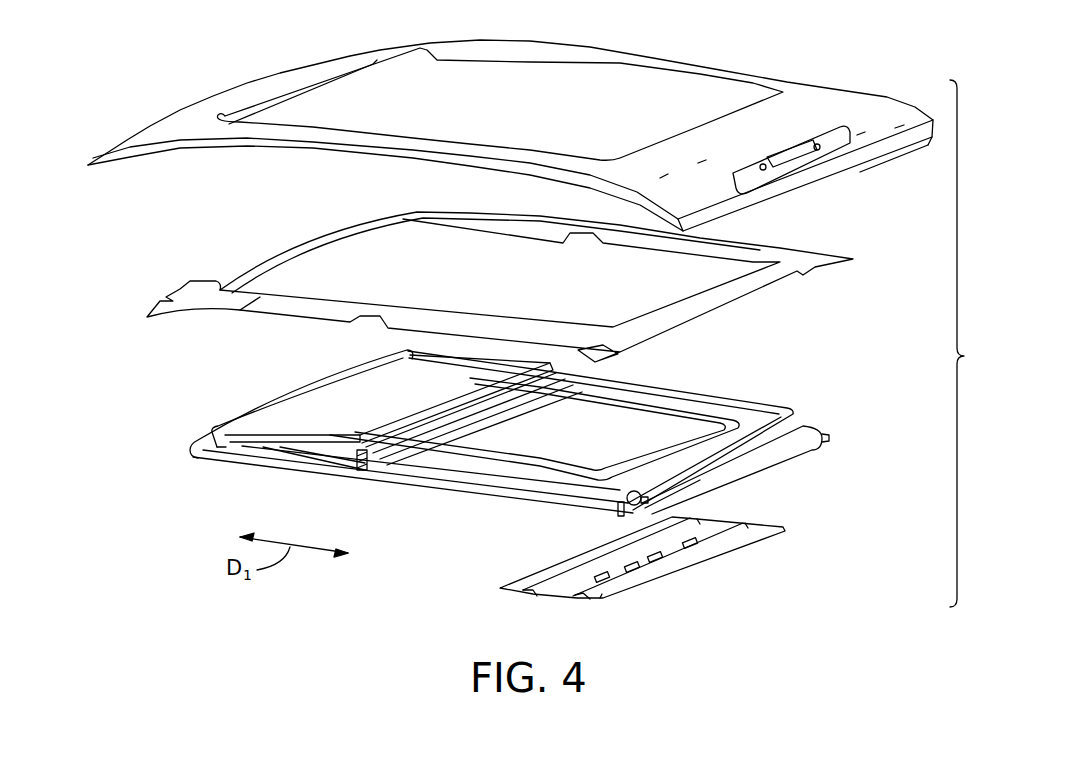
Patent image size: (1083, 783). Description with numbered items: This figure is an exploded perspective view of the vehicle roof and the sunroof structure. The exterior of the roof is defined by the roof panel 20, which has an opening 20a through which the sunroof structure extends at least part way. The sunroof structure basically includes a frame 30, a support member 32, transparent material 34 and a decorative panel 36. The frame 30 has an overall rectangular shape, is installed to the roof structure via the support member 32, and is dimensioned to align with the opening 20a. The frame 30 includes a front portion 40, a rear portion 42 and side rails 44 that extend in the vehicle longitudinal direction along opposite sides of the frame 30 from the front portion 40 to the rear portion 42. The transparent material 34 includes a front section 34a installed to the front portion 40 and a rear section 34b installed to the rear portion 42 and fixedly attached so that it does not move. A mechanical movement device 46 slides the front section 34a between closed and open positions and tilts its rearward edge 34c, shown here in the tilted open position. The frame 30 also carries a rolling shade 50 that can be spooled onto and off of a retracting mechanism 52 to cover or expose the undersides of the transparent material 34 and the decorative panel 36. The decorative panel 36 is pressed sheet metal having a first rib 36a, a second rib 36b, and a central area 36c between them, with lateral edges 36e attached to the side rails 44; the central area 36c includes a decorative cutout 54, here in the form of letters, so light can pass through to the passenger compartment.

The roof panel 20 is at (813, 97).
The opening 20a is at (707, 77).
The support member 32 is at (803, 260).
The frame 30 is at (792, 407).
The transparent material 34 is at (475, 466).
The front section 34a is at (407, 390).
The rear section 34b is at (553, 437).
The rearward edge 34c is at (483, 387).
The decorative panel 36 is at (654, 574).
The first rib 36a is at (527, 597).
The second rib 36b is at (580, 603).
The central area 36c is at (577, 587).
The lateral edges 36e is at (773, 523).
The front portion 40 is at (273, 408).
The rear portion 42 is at (760, 428).
The side rails 44 is at (683, 390).
The mechanical movement device 46 is at (313, 457).
The rolling shade 50 is at (733, 460).
The retracting mechanism 52 is at (628, 512).
The decorative cutout 54 is at (657, 560).